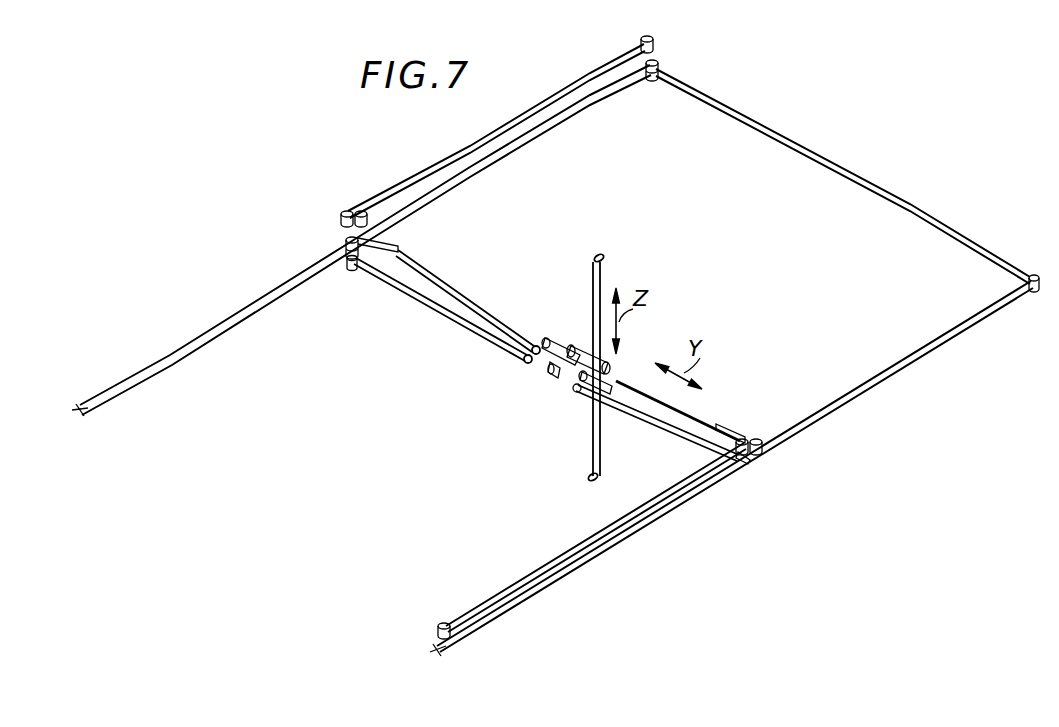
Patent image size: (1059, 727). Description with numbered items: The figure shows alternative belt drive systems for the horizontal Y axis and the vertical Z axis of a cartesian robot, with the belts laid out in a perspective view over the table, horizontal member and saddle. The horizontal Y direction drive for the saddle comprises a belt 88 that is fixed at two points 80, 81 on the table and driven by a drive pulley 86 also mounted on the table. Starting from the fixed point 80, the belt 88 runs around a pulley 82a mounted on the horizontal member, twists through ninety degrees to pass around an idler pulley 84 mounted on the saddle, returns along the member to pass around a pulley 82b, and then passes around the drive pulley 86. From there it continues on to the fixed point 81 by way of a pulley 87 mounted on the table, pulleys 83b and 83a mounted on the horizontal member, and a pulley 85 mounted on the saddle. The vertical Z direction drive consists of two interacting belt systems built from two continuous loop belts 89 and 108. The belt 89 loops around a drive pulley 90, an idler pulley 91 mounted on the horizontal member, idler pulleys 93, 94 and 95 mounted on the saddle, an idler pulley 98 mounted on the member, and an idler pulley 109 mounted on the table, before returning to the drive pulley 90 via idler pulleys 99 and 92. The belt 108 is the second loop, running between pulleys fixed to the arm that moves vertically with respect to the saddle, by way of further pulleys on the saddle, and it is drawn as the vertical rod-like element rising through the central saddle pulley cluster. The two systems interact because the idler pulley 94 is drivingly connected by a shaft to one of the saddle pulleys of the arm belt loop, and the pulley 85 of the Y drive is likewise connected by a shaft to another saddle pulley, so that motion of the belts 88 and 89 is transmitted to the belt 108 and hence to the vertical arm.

The fixed point 80 is at (75, 405).
The fixed point 81 is at (437, 652).
The pulley 82a is at (353, 270).
The pulley 82b is at (346, 247).
The pulley 83a is at (748, 464).
The pulley 83b is at (714, 442).
The idler pulley 84 is at (522, 362).
The pulley 85 is at (586, 386).
The drive pulley 86 is at (660, 66).
The pulley 87 is at (1035, 276).
The belt 88 is at (810, 150).
The continuous loop belt 89 is at (523, 125).
The drive pulley 90 is at (650, 38).
The idler pulley 91 is at (350, 211).
The idler pulley 92 is at (364, 211).
The idler pulley 93 is at (568, 335).
The idler pulley 94 is at (556, 380).
The idler pulley 95 is at (562, 342).
The idler pulley 98 is at (745, 439).
The idler pulley 99 is at (760, 439).
The continuous loop belt 108 is at (592, 462).
The idler pulley 109 is at (447, 624).